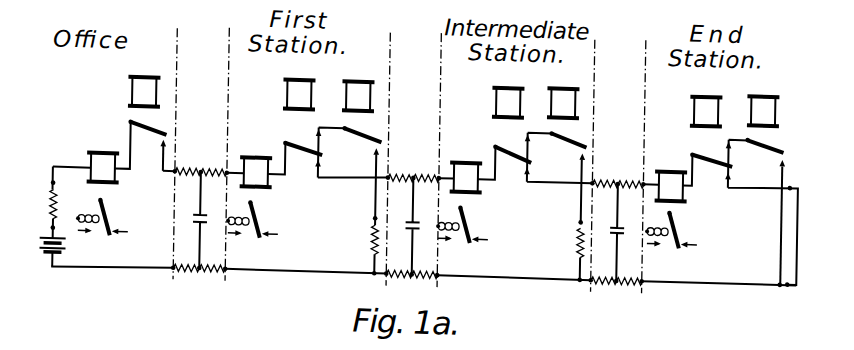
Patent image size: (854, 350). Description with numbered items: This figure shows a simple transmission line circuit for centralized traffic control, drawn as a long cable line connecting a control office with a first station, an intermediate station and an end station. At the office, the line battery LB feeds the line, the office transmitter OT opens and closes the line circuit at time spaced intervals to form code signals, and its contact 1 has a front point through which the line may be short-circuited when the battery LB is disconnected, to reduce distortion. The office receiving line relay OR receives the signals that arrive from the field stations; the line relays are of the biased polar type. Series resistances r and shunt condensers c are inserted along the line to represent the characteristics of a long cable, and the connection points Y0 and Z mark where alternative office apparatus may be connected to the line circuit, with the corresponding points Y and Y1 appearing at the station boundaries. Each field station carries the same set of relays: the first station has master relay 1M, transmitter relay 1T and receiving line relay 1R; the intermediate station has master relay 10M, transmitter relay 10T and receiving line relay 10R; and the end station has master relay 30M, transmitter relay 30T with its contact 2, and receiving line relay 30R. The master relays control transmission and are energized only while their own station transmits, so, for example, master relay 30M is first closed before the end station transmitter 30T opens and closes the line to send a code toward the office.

The office transmitter relay OT is at (144, 81).
The office receiving line relay OR is at (103, 156).
The contact of relay OT 1 is at (149, 133).
The line circuit connection point Y0 is at (174, 174).
The line terminal Y is at (222, 174).
The line terminal Y1 is at (388, 175).
The series resistance r is at (208, 171).
The shunt condenser c is at (194, 232).
The line battery LB is at (50, 267).
The line circuit connection point Z is at (172, 275).
The first station master relay 1M is at (299, 84).
The first station transmitter relay 1T is at (358, 86).
The first station receiving line relay 1R is at (256, 162).
The intermediate station master relay 10M is at (505, 91).
The intermediate station transmitter relay 10T is at (565, 92).
The intermediate station receiving line relay 10R is at (464, 167).
The end station master relay 30M is at (708, 99).
The end station transmitter relay 30T is at (766, 98).
The end station receiving line relay 30R is at (668, 175).
The end station relay armature 2 is at (767, 136).